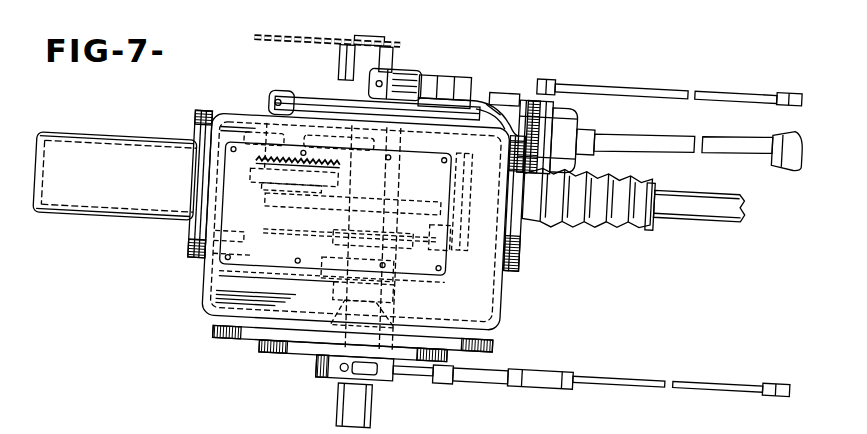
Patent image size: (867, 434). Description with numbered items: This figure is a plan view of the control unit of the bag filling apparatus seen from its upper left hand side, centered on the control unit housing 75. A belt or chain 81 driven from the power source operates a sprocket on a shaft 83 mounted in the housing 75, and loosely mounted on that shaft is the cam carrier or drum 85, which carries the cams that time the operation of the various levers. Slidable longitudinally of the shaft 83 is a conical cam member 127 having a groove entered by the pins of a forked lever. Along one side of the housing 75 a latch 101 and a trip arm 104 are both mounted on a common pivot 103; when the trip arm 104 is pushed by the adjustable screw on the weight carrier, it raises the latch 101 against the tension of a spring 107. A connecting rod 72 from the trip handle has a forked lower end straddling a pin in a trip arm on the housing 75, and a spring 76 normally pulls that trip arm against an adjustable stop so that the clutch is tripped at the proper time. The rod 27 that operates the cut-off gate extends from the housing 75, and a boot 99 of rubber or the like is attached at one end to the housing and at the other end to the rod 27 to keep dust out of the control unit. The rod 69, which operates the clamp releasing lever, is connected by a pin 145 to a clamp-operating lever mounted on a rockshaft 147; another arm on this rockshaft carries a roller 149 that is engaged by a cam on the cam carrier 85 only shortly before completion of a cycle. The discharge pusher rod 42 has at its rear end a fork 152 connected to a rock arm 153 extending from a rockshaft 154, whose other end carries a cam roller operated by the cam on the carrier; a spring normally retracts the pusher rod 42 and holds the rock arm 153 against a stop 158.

The rod 27 is at (722, 214).
The discharge pusher rod 42 is at (735, 155).
The rod 69 is at (645, 88).
The connecting rod 72 is at (647, 380).
The control unit housing 75 is at (505, 305).
The spring 76 is at (497, 373).
The belt or chain 81 is at (312, 45).
The shaft 83 is at (378, 36).
The cam carrier or drum 85 is at (450, 272).
The boot 99 is at (617, 226).
The latch 101 is at (431, 183).
The pivot 103 is at (280, 90).
The trip arm 104 is at (292, 100).
The spring 107 is at (262, 120).
The conical cam member 127 is at (387, 317).
The pin 145 is at (483, 78).
The rockshaft 147 is at (460, 195).
The roller 149 is at (470, 233).
The fork 152 is at (570, 116).
The rock arm 153 is at (537, 88).
The rockshaft 154 is at (393, 70).
The stop 158 is at (437, 78).